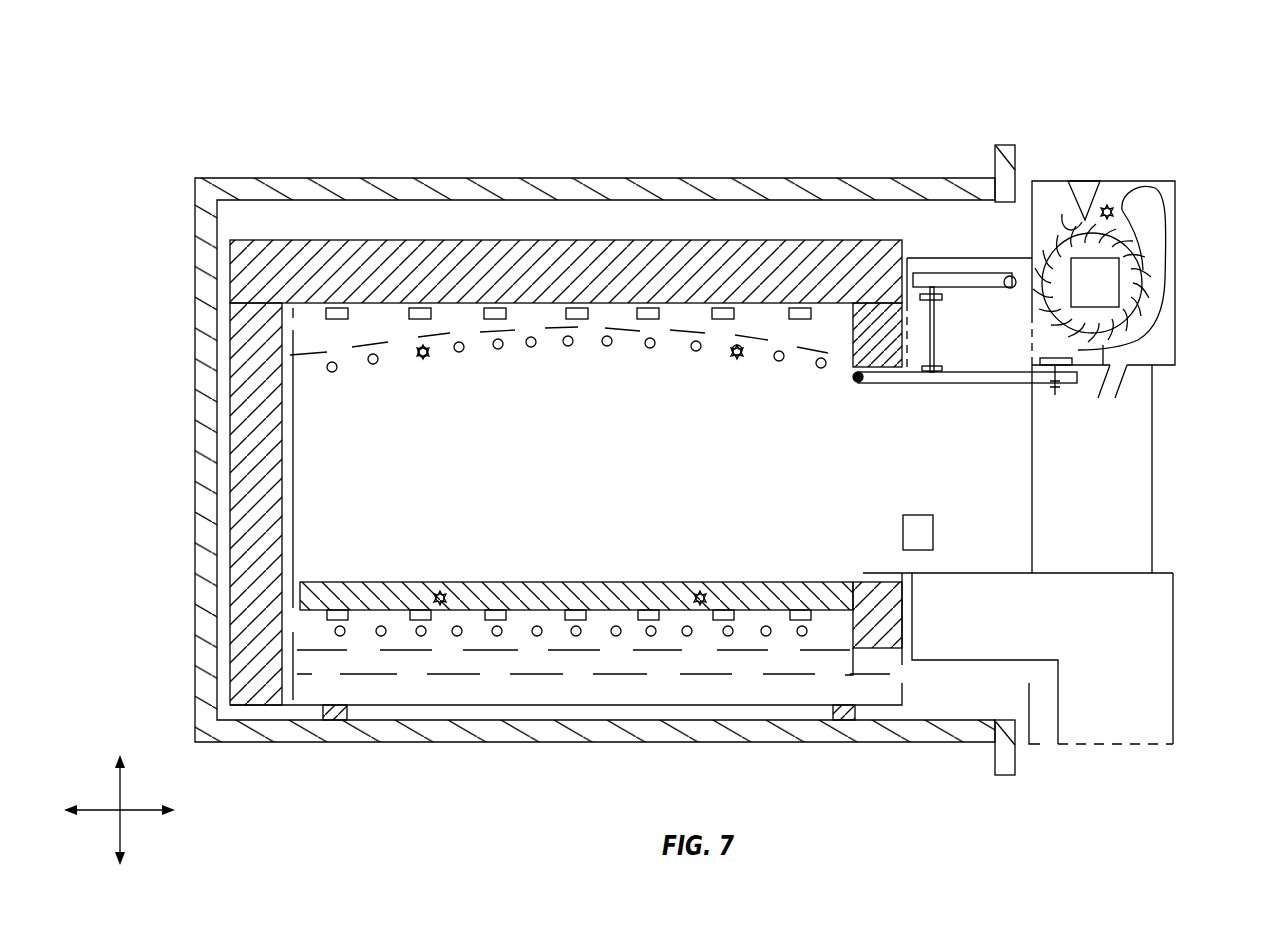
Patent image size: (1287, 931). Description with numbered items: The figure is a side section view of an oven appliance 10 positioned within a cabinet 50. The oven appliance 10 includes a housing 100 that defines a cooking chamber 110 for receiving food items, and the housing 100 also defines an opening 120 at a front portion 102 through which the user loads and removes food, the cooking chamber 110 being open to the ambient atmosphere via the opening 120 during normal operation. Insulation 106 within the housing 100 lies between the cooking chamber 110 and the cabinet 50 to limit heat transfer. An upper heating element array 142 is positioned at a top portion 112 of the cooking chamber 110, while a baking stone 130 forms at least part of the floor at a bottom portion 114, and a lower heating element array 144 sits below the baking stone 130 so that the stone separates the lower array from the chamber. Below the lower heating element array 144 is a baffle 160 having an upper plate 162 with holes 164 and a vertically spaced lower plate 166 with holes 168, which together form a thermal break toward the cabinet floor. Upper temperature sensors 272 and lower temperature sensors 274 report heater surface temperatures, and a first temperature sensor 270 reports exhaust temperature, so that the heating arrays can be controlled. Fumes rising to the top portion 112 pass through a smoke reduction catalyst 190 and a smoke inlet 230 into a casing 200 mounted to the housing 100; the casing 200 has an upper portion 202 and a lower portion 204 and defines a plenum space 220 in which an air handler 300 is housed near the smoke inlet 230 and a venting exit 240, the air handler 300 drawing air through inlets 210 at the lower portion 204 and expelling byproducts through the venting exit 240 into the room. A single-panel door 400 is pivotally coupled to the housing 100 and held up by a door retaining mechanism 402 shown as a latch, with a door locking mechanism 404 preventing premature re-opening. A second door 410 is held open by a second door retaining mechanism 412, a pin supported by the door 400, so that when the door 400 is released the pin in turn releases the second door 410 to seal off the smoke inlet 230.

The oven appliance 10 is at (298, 131).
The cabinet 50 is at (220, 178).
The housing 100 is at (234, 450).
The front portion 102 is at (831, 472).
The insulation 106 is at (527, 272).
The cooking chamber 110 is at (578, 467).
The top portion 112 is at (559, 375).
The bottom portion 114 is at (815, 556).
The opening 120 is at (936, 487).
The baking stone 130 is at (375, 590).
The upper heating element array 142 is at (607, 347).
The lower heating element array 144 is at (542, 640).
The baffle 160 is at (593, 667).
The upper plate 162 is at (558, 590).
The holes 164 is at (628, 655).
The lower plate 166 is at (620, 673).
The holes 168 is at (830, 668).
The smoke reduction catalyst 190 is at (853, 340).
The casing 200 is at (1090, 699).
The upper portion 202 is at (1096, 248).
The lower portion 204 is at (1175, 738).
The inlets 210 is at (1157, 747).
The plenum space 220 is at (1092, 698).
The smoke inlet 230 is at (1027, 322).
The venting exit 240 is at (1115, 181).
The first temperature sensor 270 is at (1115, 212).
The upper temperature sensors 272 is at (429, 357).
The lower temperature sensors 274 is at (441, 594).
The air handler 300 is at (1082, 222).
The door 400 is at (920, 387).
The door retaining mechanism 402 is at (1052, 387).
The door locking mechanism 404 is at (925, 533).
The second door 410 is at (930, 270).
The second door retaining mechanism 412 is at (937, 350).